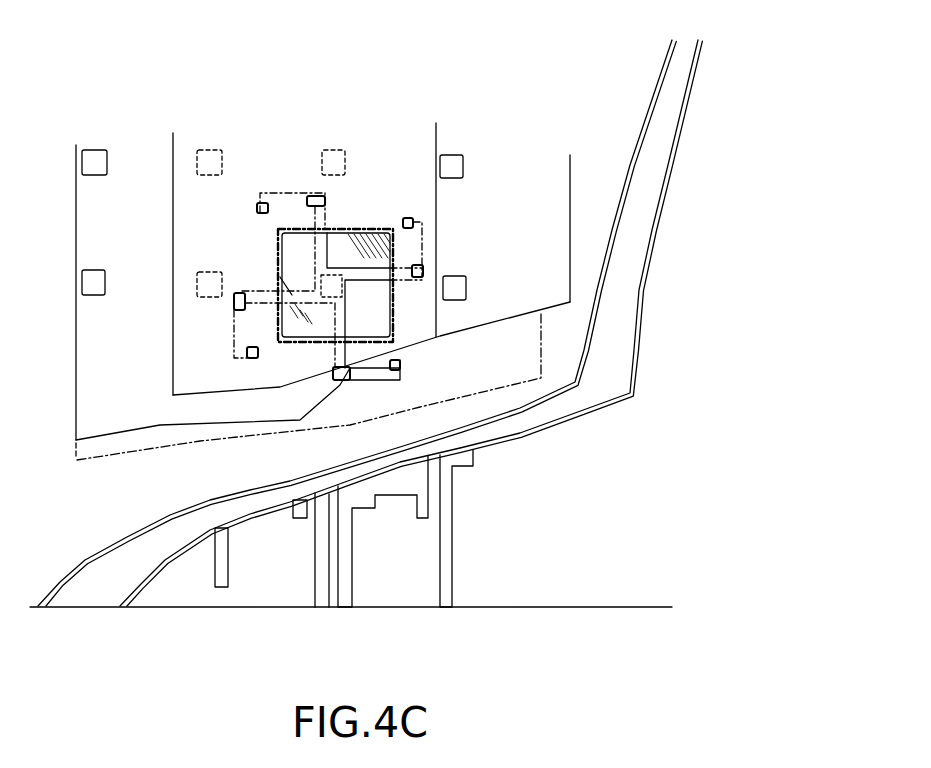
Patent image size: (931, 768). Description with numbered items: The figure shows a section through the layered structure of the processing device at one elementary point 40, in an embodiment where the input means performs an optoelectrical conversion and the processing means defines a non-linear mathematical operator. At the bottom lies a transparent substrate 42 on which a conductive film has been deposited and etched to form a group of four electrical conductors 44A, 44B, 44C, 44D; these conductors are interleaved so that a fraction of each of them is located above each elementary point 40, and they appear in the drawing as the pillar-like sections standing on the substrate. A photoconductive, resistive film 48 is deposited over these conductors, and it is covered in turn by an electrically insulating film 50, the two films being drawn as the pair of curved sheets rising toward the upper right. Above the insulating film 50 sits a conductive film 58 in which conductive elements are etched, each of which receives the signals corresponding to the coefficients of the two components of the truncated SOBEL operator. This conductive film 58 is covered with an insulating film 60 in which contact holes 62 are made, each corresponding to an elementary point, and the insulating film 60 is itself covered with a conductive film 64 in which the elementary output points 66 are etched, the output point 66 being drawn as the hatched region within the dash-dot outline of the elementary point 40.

The elementary point 40 is at (353, 225).
The elementary output point 66 is at (375, 224).
The conductive film 64 is at (459, 137).
The contact hole 62 is at (460, 270).
The insulating film 60 is at (566, 165).
The electrically insulating film 50 is at (592, 260).
The photoconductive resistive film 48 is at (620, 375).
The conductive film 58 is at (100, 450).
The electrical conductor 44A is at (222, 587).
The electrical conductor 44B is at (317, 590).
The electrical conductor 44C is at (352, 590).
The electrical conductor 44D is at (450, 590).
The transparent substrate 42 is at (592, 598).